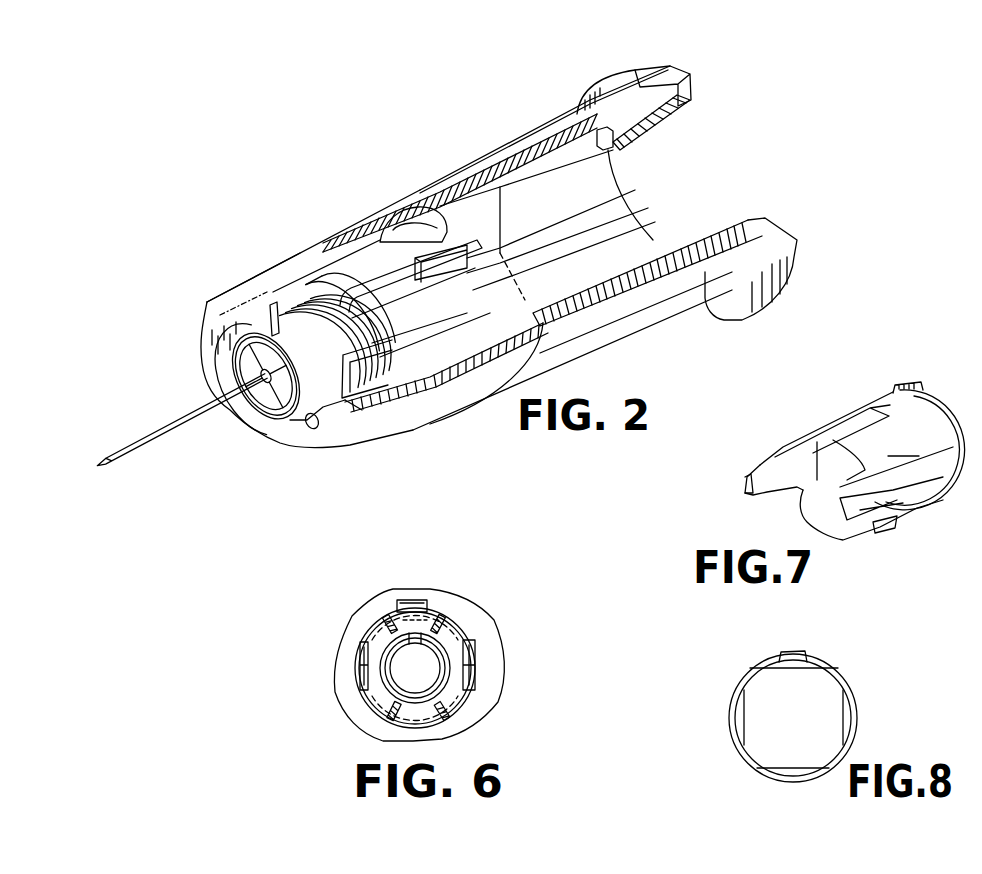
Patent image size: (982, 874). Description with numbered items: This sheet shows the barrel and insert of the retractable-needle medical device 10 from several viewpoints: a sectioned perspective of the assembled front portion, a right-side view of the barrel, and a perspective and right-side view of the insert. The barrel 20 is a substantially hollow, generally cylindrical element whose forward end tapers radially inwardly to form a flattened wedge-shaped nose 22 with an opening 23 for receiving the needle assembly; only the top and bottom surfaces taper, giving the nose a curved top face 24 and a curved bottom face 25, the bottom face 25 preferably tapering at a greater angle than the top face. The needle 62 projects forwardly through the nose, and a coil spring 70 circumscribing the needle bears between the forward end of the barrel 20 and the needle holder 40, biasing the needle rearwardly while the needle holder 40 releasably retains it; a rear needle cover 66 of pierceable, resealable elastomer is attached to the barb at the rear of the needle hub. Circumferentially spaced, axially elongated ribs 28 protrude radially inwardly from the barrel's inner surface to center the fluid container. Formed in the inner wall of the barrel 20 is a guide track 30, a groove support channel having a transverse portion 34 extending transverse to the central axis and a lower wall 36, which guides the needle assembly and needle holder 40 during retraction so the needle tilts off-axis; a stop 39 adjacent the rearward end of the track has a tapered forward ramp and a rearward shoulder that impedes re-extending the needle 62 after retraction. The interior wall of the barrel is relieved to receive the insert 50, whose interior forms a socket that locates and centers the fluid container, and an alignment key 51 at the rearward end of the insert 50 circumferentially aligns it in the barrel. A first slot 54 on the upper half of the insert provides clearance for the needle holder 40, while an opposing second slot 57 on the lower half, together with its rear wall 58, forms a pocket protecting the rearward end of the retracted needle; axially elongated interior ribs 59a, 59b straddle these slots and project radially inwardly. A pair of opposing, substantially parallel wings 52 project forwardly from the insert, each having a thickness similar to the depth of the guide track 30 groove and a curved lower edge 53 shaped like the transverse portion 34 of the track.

In FIG. 2, the device 10 is at (473, 153).
In FIG. 2, the barrel 20 is at (376, 207).
In FIG. 6, the barrel 20 is at (479, 612).
In FIG. 2, the nose 22 is at (200, 337).
In FIG. 2, the opening 23 is at (277, 423).
In FIG. 6, the opening 23 is at (392, 667).
In FIG. 2, the top face 24 is at (248, 288).
In FIG. 2, the bottom face 25 is at (350, 441).
In FIG. 2, the ribs 28 is at (420, 348).
In FIG. 6, the ribs 28 is at (390, 620).
In FIG. 2, the guide track 30 is at (440, 252).
In FIG. 6, the guide track 30 is at (364, 668).
In FIG. 2, the transverse portion 34 is at (513, 247).
In FIG. 2, the lower wall 36 is at (387, 278).
In FIG. 2, the stop 39 is at (425, 265).
In FIG. 2, the needle holder 40 is at (318, 280).
In FIG. 2, the insert 50 is at (693, 245).
In FIG. 7, the insert 50 is at (862, 465).
In FIG. 8, the insert 50 is at (853, 698).
In FIG. 7, the alignment key 51 is at (903, 384).
In FIG. 8, the alignment key 51 is at (802, 655).
In FIG. 7, the wings 52 is at (760, 467).
In FIG. 7, the lower edge 53 is at (765, 495).
In FIG. 7, the first slot 54 is at (843, 420).
In FIG. 7, the second slot 57 is at (853, 530).
In FIG. 8, the rear wall 58 is at (797, 770).
In FIG. 8, the rib 59a is at (773, 667).
In FIG. 7, the rib 59b is at (877, 532).
In FIG. 2, the needle 62 is at (162, 435).
In FIG. 2, the rear needle cover 66 is at (487, 290).
In FIG. 2, the spring 70 is at (302, 310).